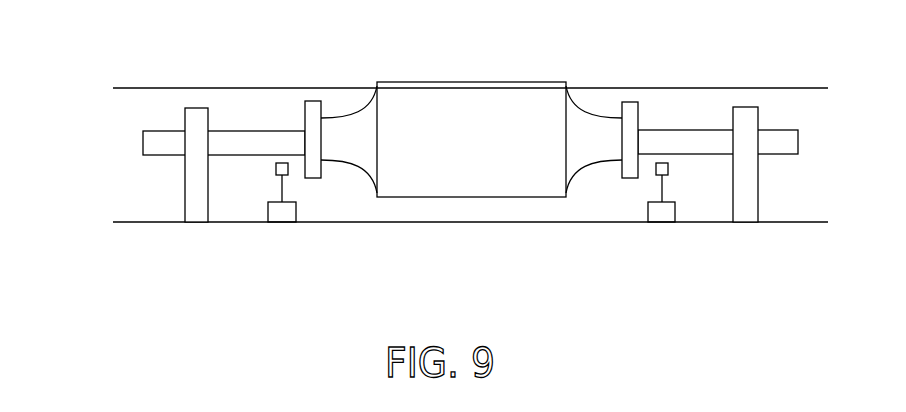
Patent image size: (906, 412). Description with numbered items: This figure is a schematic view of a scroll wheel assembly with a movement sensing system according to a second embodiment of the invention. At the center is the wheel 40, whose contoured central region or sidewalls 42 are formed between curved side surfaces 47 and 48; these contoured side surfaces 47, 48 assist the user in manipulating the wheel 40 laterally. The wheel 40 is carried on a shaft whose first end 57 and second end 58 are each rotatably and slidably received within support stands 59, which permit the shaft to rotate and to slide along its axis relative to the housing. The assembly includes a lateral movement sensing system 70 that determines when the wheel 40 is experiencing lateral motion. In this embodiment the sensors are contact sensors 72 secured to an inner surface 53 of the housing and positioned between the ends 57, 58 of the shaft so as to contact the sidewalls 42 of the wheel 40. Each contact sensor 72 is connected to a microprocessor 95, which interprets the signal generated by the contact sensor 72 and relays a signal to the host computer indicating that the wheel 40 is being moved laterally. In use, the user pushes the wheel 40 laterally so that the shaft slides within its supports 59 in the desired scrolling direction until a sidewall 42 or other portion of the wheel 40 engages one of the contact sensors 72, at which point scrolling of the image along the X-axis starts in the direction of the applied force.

The wheel 40 is at (505, 82).
The sidewall 42 is at (400, 95).
The curved side surface 47 is at (371, 100).
The curved side surface 48 is at (583, 110).
The inner surface 53 is at (777, 220).
The first end 57 is at (141, 141).
The second end 58 is at (799, 140).
The support stand 59 is at (198, 115).
The lateral movement sensing system 70 is at (257, 206).
The contact sensor 72 is at (278, 175).
The microprocessor 95 is at (282, 213).